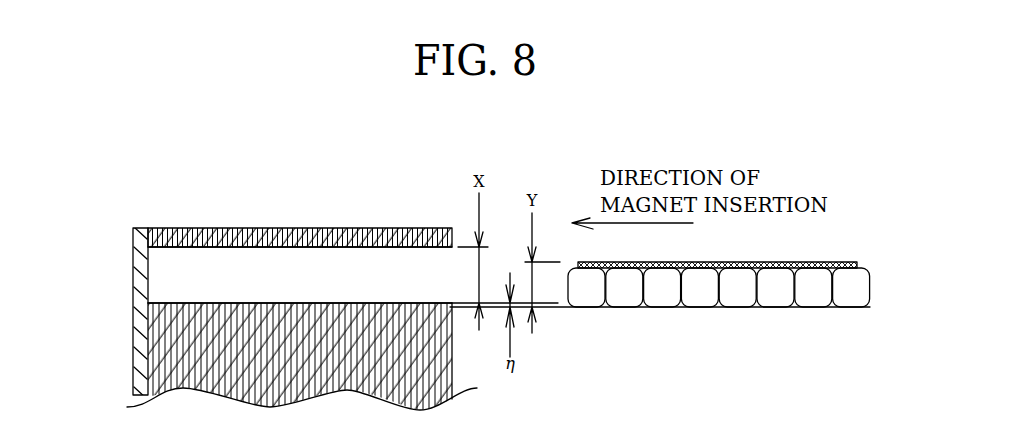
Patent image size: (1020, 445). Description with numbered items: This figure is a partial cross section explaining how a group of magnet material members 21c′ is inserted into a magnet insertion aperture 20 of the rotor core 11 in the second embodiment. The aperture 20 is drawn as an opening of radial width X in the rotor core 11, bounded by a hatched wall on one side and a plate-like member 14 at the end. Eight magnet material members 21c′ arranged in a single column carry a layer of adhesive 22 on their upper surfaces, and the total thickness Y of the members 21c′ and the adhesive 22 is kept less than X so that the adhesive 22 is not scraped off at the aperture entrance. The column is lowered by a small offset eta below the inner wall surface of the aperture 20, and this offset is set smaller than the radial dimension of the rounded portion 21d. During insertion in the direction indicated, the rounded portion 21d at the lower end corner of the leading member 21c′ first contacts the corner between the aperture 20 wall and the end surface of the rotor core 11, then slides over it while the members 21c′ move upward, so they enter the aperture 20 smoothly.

The rotor core 11 is at (193, 228).
The end plate 14 is at (140, 348).
The magnet insertion aperture 20 is at (160, 277).
The rounded portion 21d is at (568, 307).
The magnet material member 21c′ is at (732, 302).
The adhesive 22 is at (717, 268).